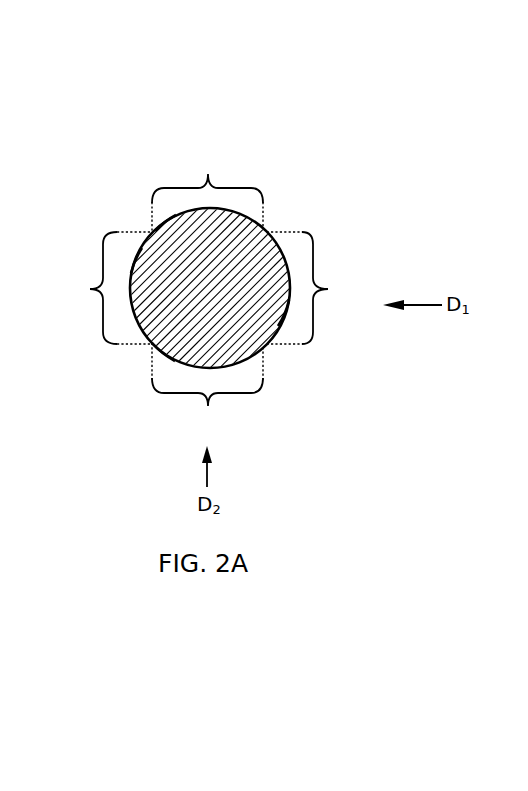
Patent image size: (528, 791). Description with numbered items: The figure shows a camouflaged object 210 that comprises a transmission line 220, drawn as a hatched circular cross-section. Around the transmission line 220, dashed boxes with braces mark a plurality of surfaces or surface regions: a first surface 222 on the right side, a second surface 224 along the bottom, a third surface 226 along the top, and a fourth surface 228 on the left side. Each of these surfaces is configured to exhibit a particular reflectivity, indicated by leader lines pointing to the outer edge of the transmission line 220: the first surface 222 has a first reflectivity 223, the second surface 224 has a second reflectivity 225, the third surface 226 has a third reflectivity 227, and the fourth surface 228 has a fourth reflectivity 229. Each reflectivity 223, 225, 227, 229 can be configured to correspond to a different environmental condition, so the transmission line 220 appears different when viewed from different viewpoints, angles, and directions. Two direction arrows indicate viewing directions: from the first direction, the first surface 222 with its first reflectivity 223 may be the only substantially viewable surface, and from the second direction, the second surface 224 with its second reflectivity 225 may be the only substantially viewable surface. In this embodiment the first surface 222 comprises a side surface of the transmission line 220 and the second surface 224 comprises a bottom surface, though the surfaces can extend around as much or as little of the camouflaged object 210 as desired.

The camouflaged object 210 is at (210, 106).
The transmission line 220 is at (244, 258).
The first surface 222 is at (337, 288).
The first reflectivity 223 is at (284, 311).
The second surface 224 is at (207, 404).
The second reflectivity 225 is at (164, 355).
The third surface 226 is at (207, 175).
The third reflectivity 227 is at (166, 219).
The fourth surface 228 is at (80, 288).
The fourth reflectivity 229 is at (135, 258).